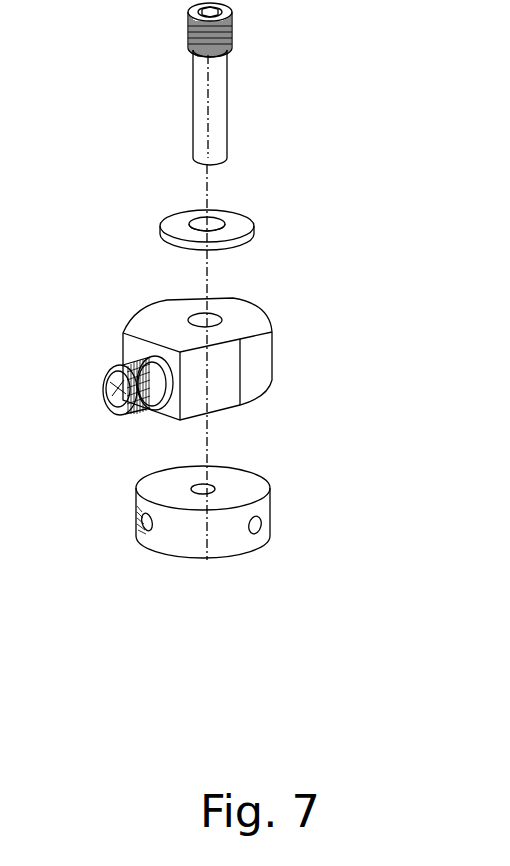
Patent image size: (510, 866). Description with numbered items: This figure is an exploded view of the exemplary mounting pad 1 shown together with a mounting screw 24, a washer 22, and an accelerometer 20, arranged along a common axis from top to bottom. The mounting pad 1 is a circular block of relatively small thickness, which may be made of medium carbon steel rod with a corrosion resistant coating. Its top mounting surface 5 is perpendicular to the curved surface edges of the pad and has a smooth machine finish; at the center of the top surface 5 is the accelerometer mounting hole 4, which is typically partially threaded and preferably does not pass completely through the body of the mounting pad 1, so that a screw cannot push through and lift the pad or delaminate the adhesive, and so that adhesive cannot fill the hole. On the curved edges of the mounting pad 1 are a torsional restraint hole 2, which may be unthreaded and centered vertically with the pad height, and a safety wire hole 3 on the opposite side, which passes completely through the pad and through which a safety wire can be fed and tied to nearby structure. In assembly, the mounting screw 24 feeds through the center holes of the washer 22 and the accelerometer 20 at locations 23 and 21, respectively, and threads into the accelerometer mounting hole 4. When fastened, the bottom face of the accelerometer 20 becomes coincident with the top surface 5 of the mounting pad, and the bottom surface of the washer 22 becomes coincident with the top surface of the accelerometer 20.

The mounting pad 1 is at (200, 558).
The torsional restraint hole 2 is at (265, 540).
The safety wire hole 3 is at (140, 535).
The accelerometer mounting hole 4 is at (215, 485).
The top mounting surface 5 is at (162, 490).
The accelerometer 20 is at (272, 358).
The accelerometer center hole location 21 is at (263, 305).
The washer 22 is at (255, 232).
The washer center hole location 23 is at (180, 222).
The mounting screw 24 is at (217, 130).